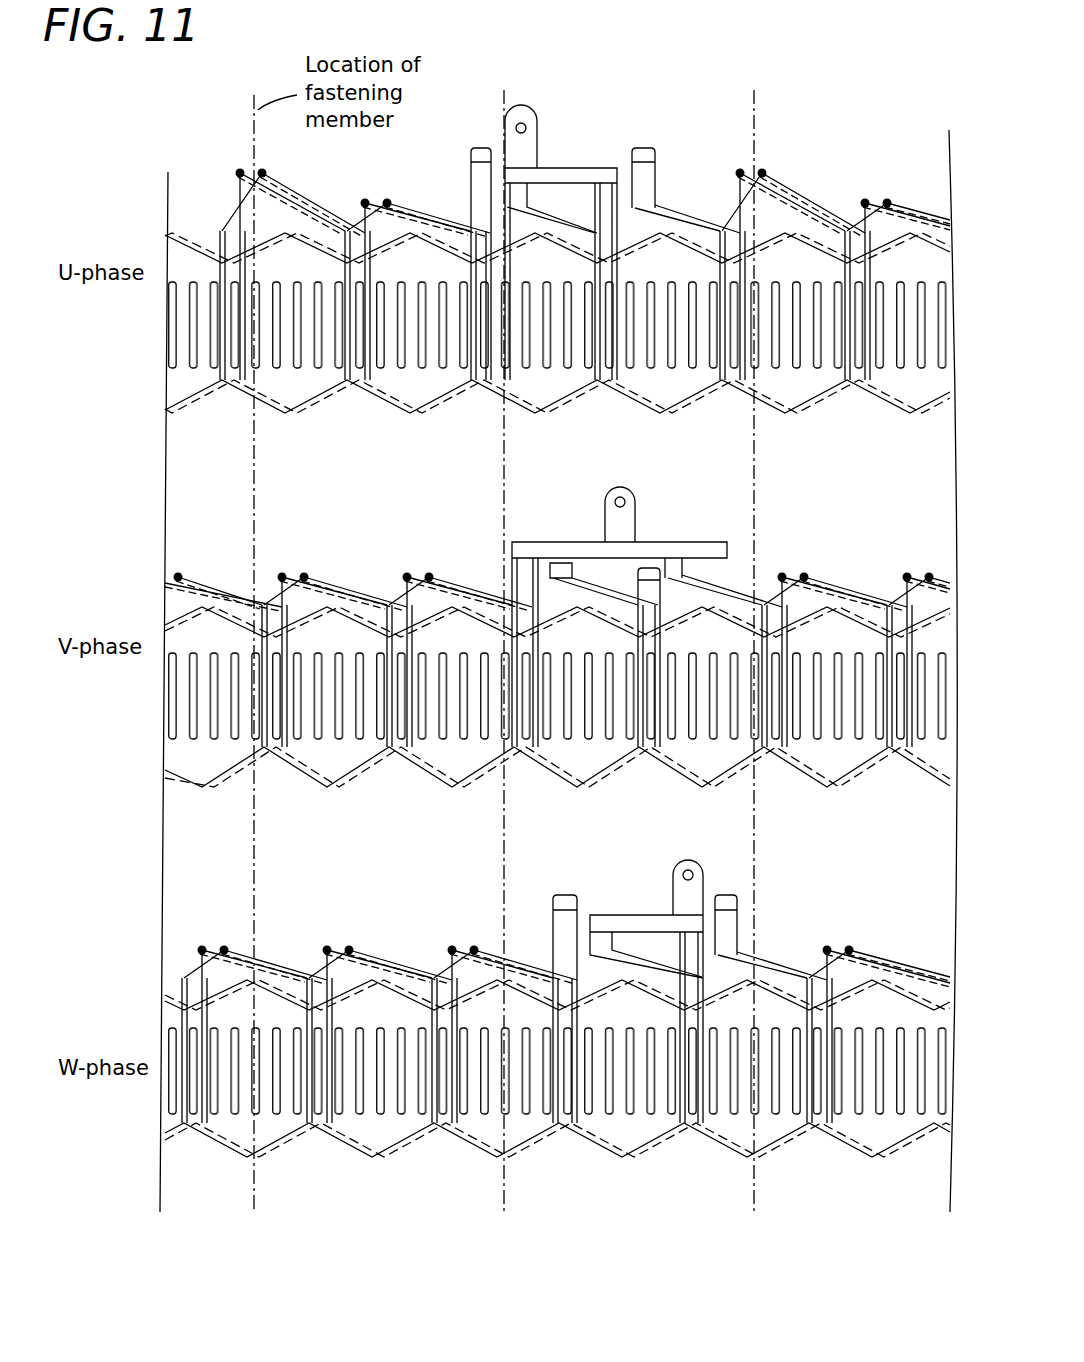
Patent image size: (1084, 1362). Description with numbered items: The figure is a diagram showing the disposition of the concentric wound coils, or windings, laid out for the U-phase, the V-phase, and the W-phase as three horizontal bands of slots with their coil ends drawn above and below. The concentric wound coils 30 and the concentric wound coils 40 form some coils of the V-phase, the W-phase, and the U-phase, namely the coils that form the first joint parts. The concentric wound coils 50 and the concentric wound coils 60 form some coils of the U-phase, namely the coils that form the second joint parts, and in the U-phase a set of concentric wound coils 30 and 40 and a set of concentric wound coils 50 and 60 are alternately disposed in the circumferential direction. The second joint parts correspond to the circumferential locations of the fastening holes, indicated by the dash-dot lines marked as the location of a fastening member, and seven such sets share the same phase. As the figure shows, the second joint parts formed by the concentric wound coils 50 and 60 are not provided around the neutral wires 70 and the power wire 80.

The concentric wound coil 30 is at (425, 214).
The concentric wound coil 40 is at (409, 200).
The concentric wound coil 50 is at (240, 201).
The concentric wound coil 60 is at (294, 212).
The neutral wire 70 is at (480, 147).
The power wire 80 is at (573, 168).